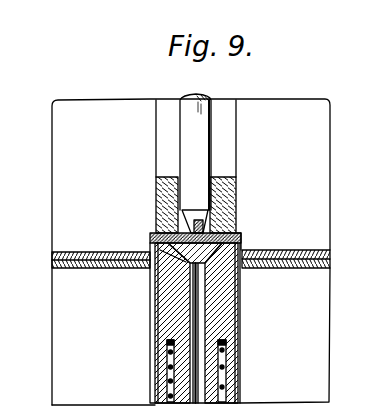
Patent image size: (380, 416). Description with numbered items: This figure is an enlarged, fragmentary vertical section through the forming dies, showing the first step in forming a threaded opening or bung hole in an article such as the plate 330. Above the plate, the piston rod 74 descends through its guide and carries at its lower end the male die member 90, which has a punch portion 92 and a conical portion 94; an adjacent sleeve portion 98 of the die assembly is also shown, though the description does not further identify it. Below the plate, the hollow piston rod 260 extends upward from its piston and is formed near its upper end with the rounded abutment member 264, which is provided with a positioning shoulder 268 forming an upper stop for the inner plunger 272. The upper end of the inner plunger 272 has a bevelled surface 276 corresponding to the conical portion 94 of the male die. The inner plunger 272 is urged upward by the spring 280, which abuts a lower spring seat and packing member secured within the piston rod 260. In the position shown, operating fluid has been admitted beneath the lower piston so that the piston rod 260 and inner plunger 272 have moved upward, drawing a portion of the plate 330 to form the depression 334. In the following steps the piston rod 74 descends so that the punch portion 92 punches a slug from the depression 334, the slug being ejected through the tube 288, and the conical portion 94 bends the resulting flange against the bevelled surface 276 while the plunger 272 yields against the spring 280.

The piston rod 74 is at (208, 118).
The male die member 90 is at (157, 201).
The punch portion 92 is at (204, 222).
The conical portion 94 is at (237, 186).
The left sleeve block 98 is at (156, 180).
The hollow piston rod 260 is at (238, 356).
The rounded abutment member 264 is at (228, 250).
The positioning shoulder 268 is at (240, 270).
The inner plunger 272 is at (215, 317).
The bevelled surface 276 is at (163, 277).
The spring 280 is at (224, 387).
The tube 288 is at (173, 368).
The plate 330 is at (310, 268).
The depression 334 is at (150, 238).